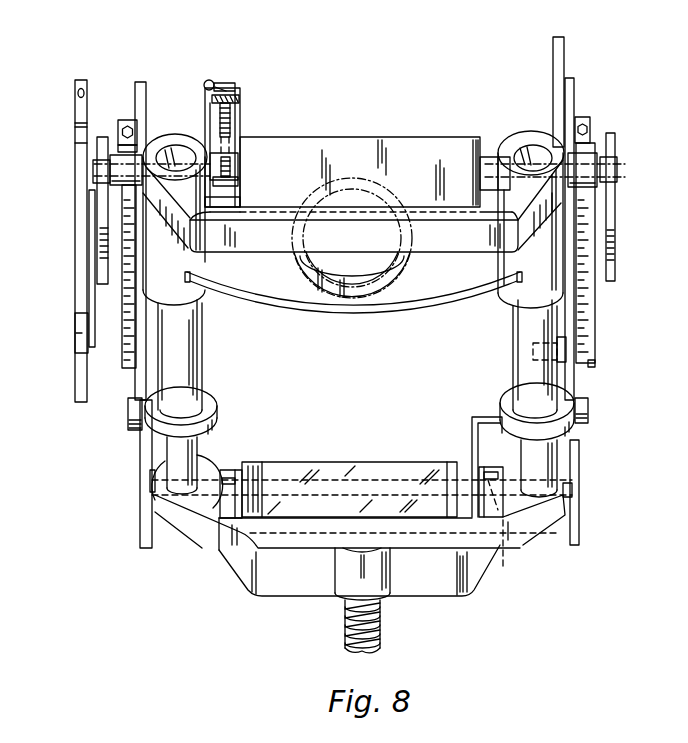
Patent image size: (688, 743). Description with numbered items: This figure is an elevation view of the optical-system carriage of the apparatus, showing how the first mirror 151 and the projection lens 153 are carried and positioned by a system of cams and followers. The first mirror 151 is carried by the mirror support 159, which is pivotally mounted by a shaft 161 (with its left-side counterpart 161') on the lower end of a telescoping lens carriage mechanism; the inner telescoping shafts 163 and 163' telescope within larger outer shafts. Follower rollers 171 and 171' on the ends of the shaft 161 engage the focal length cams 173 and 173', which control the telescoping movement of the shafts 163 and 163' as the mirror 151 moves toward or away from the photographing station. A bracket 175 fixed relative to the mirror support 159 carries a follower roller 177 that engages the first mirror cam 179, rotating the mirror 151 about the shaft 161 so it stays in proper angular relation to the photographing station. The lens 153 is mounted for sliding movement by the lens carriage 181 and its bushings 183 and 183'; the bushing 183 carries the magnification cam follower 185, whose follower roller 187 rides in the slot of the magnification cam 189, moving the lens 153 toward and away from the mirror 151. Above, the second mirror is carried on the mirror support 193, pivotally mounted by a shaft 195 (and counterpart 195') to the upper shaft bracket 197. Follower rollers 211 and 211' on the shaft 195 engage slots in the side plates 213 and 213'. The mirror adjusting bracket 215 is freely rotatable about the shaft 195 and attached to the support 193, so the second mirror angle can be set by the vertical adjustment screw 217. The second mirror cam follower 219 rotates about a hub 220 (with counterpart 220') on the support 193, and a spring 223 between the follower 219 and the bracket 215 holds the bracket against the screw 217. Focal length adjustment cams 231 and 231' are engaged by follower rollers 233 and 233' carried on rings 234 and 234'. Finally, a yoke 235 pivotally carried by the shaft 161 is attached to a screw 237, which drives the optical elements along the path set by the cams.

The first mirror 151 is at (392, 463).
The projection lens 153 is at (368, 305).
The mirror support 159 is at (468, 478).
The shaft 161 is at (516, 554).
The shaft 161' is at (157, 479).
The inner telescoping lens carriage shaft 163 is at (210, 461).
The telescoping lens carriage shaft 163' is at (579, 464).
The follower roller 171 is at (286, 487).
The follower roller 171' is at (560, 484).
The focal length cam 173 is at (125, 474).
The focal length cam 173' is at (601, 311).
The bracket 175 is at (470, 424).
The follower roller 177 is at (568, 350).
The first mirror cam 179 is at (565, 55).
The lens carriage 181 is at (447, 291).
The bushing 183 is at (197, 287).
The bushing 183' is at (514, 285).
The magnification cam follower 185 is at (95, 348).
The follower roller 187 is at (80, 345).
The magnification cam 189 is at (76, 190).
The mirror support 193 is at (448, 136).
The shaft 195 is at (531, 136).
The shaft 195' is at (175, 138).
The upper shaft bracket 197 is at (495, 247).
The follower roller 211 is at (117, 161).
The follower roller 211' is at (580, 170).
The side plate 213 is at (66, 214).
The side plate 213' is at (638, 207).
The mirror adjusting bracket 215 is at (228, 86).
The vertical adjustment screw 217 is at (240, 98).
The second mirror cam follower 219 is at (241, 126).
The hub 220 is at (465, 167).
The hub 220' is at (253, 183).
The spring 223 is at (207, 81).
The focal length adjustment cam 231 is at (124, 233).
The focal length adjustment cam 231' is at (613, 255).
The follower roller 233 is at (112, 414).
The follower roller 233' is at (611, 408).
The ring 234 is at (201, 405).
The ring 234' is at (569, 404).
The yoke 235 is at (445, 587).
The screw 237 is at (381, 647).